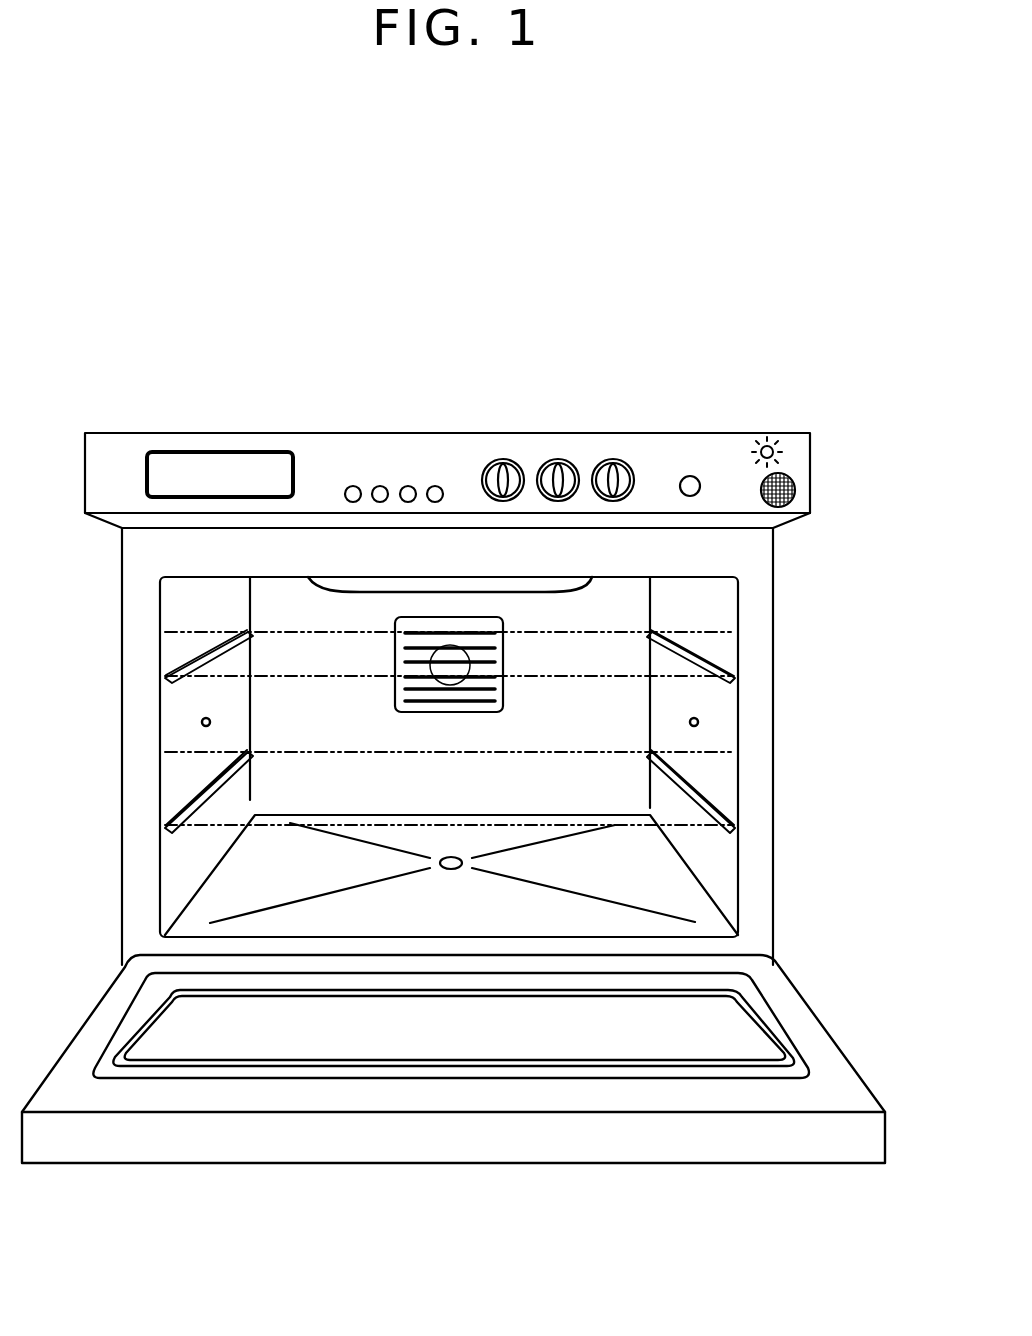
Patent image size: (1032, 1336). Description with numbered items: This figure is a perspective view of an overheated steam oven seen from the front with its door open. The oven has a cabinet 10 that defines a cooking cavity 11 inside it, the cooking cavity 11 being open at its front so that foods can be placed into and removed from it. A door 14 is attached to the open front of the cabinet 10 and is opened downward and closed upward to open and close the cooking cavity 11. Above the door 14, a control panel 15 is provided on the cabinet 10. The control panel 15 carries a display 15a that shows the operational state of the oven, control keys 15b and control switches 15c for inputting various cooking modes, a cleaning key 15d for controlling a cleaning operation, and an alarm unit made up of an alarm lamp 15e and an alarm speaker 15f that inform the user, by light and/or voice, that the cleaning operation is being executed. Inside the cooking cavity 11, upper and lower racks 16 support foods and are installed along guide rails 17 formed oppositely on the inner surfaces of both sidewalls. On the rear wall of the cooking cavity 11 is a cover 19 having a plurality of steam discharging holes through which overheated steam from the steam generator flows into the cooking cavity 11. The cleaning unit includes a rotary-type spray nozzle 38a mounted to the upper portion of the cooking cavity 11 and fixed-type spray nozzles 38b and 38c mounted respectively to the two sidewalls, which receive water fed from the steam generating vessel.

The cabinet 10 is at (686, 376).
The cooking cavity 11 is at (418, 797).
The door 14 is at (473, 1142).
The control panel 15 is at (345, 443).
The display 15a is at (207, 463).
The control keys 15b is at (408, 486).
The control switches 15c is at (557, 462).
The cleaning key 15d is at (690, 476).
The alarm lamp 15e is at (768, 440).
The alarm speaker 15f is at (797, 488).
The racks 16 is at (646, 828).
The guide rails 17 is at (210, 796).
The cover 19 is at (505, 708).
The rotary-type spray nozzle 38a is at (361, 582).
The fixed-type spray nozzle 38b is at (690, 722).
The fixed-type spray nozzle 38c is at (650, 752).